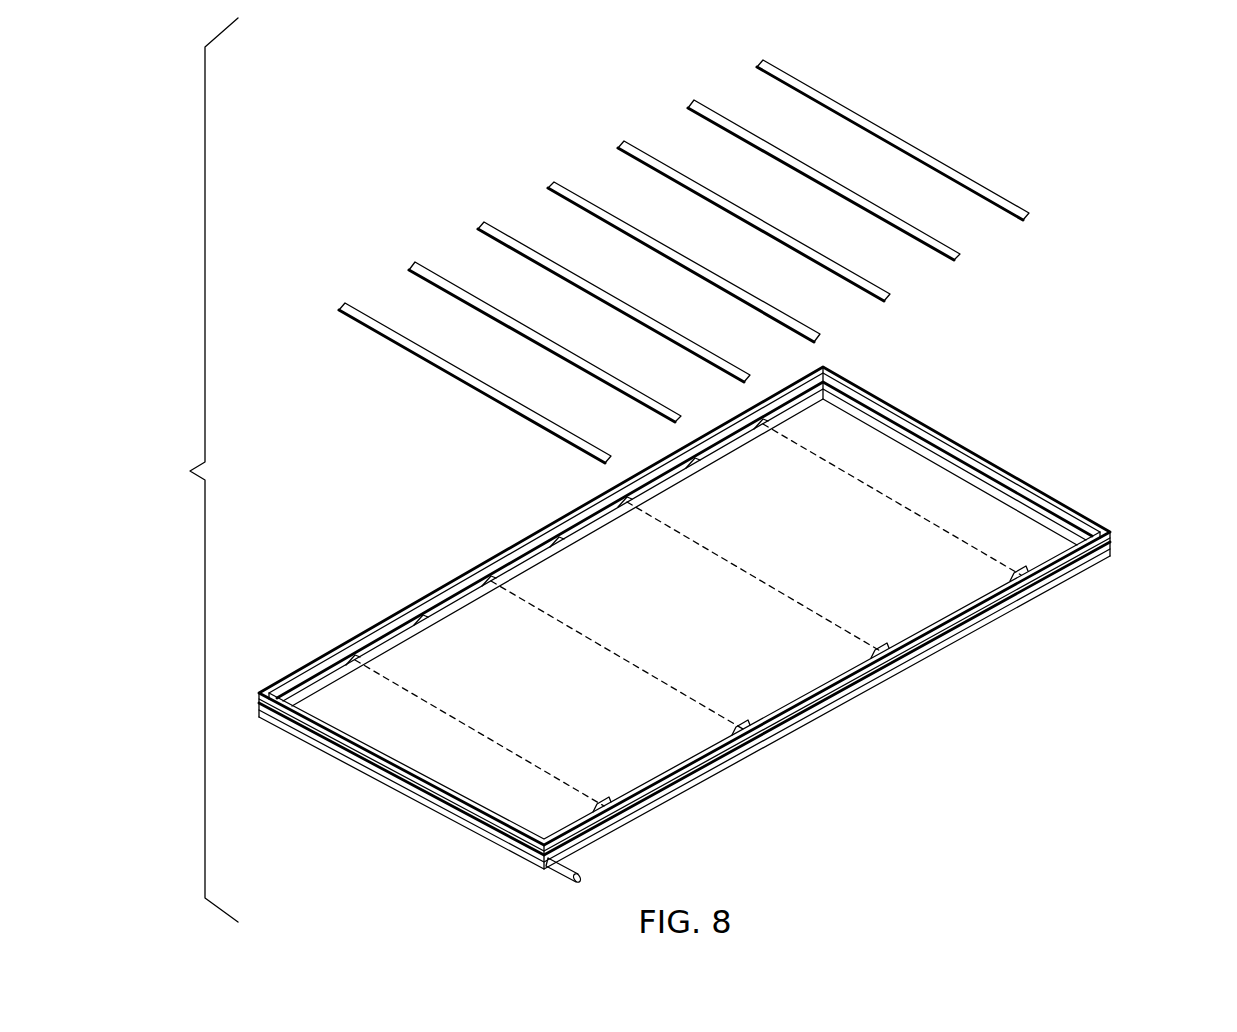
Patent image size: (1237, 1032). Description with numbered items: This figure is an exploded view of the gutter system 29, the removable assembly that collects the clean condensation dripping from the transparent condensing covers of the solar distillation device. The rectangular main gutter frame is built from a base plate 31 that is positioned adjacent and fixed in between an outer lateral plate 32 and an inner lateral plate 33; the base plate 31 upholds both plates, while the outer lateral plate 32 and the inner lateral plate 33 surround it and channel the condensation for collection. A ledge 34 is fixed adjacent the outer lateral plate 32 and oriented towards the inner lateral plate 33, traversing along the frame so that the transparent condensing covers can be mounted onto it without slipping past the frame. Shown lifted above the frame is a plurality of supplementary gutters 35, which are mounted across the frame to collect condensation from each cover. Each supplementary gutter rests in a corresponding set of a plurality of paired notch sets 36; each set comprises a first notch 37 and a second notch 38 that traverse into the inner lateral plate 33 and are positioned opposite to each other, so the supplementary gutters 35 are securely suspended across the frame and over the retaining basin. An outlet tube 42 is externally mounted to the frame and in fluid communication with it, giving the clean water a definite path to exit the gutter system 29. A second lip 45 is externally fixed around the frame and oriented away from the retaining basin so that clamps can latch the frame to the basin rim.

The gutter system 29 is at (1128, 405).
The base plate 31 is at (283, 694).
The outer lateral plate 32 is at (295, 727).
The inner lateral plate 33 is at (312, 694).
The ledge 34 is at (352, 642).
The plurality of supplementary gutters 35 is at (372, 300).
The plurality of paired notch sets 36 is at (775, 589).
The first notch 37 is at (1020, 572).
The second notch 38 is at (766, 425).
The outlet tube 42 is at (582, 879).
The second lip 45 is at (259, 692).